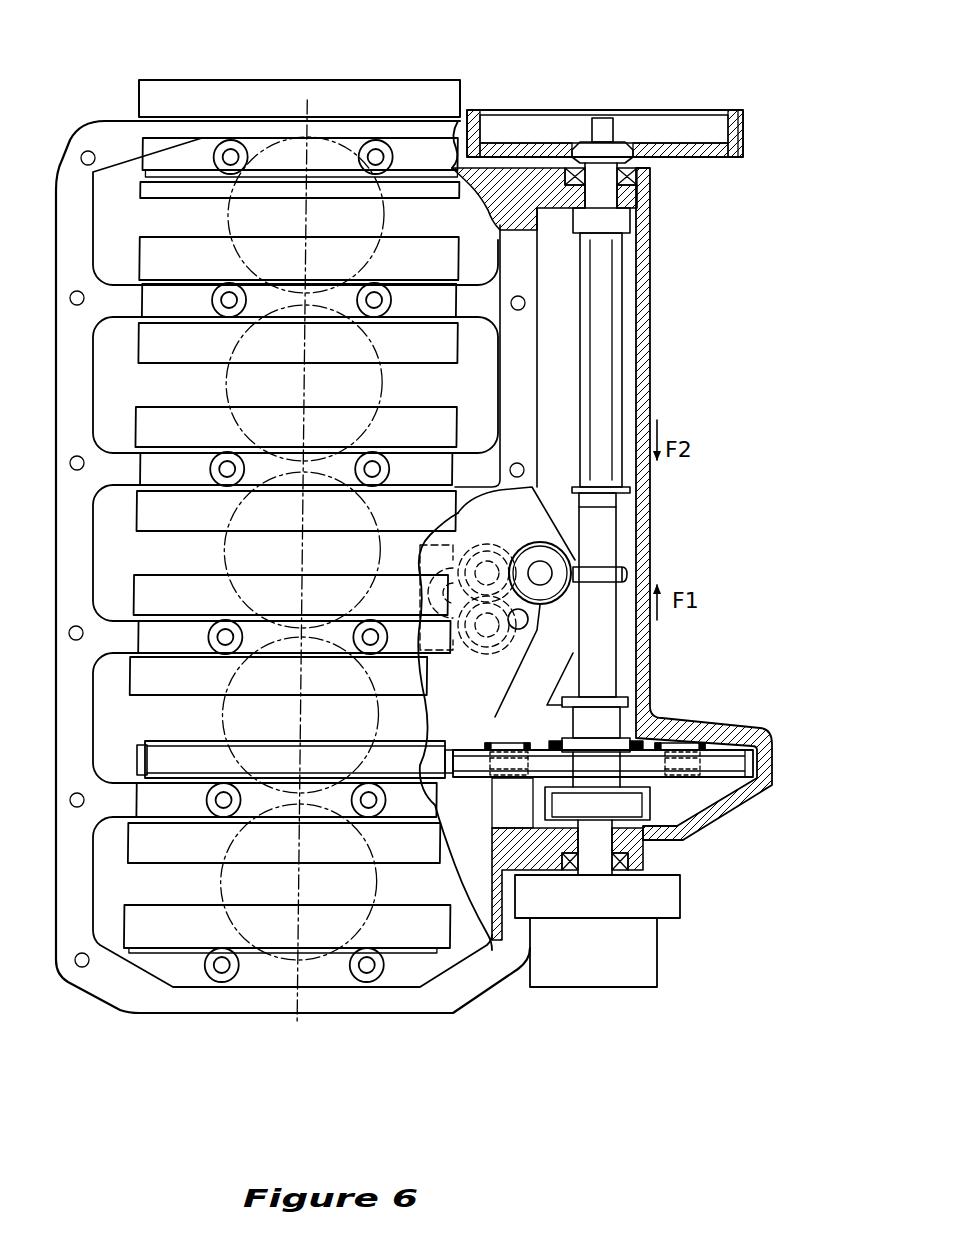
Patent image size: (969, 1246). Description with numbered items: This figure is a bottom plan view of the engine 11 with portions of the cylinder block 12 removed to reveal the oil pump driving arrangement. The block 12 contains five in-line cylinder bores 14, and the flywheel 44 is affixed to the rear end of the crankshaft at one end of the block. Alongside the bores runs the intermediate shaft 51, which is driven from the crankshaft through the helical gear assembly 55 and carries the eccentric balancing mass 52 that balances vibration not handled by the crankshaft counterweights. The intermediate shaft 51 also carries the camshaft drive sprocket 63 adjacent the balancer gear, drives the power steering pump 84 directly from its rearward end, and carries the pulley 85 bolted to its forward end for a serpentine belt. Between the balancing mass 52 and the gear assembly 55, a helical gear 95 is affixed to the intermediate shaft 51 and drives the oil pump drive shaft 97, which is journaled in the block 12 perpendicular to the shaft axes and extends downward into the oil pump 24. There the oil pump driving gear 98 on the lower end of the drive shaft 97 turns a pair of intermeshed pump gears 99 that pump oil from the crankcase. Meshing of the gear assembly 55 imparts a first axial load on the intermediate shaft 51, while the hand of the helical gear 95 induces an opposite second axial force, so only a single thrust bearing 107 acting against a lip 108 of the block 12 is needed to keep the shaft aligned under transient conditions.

The internal combustion engine 11 is at (679, 70).
The cylinder block 12 is at (480, 1000).
The cylinder bores 14 is at (376, 205).
The oil pump 24 is at (503, 778).
The flywheel 44 is at (428, 80).
The intermediate shaft 51 is at (622, 640).
The eccentric balancing mass 52 is at (623, 313).
The helical gear assembly 55 is at (773, 760).
The camshaft drive sprocket 63 is at (650, 803).
The power steering pump 84 is at (630, 973).
The pulley 85 is at (745, 133).
The helical gear 95 is at (630, 570).
The oil pump drive shaft 97 is at (541, 562).
The oil pump driving gear 98 is at (548, 605).
The pump gears 99 is at (482, 540).
The thrust bearing 107 is at (660, 718).
The lip 108 is at (585, 690).